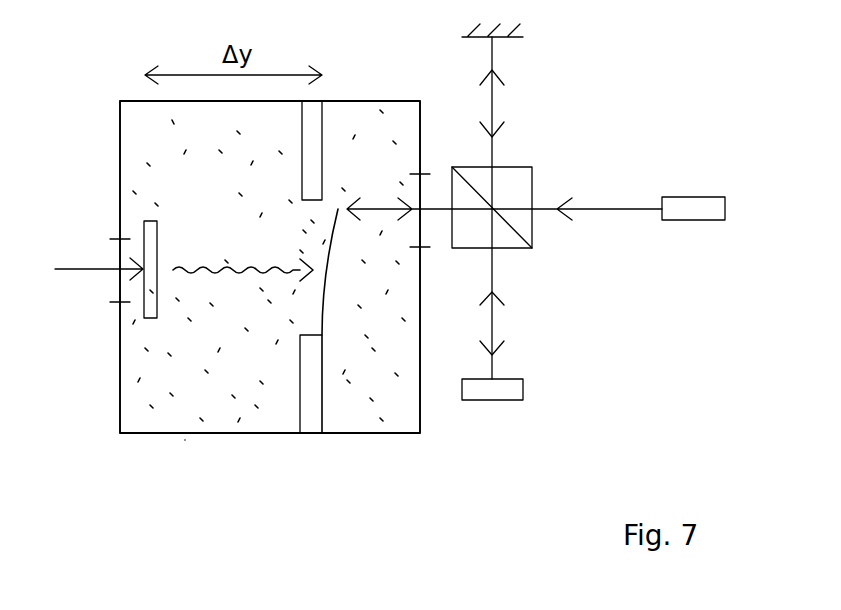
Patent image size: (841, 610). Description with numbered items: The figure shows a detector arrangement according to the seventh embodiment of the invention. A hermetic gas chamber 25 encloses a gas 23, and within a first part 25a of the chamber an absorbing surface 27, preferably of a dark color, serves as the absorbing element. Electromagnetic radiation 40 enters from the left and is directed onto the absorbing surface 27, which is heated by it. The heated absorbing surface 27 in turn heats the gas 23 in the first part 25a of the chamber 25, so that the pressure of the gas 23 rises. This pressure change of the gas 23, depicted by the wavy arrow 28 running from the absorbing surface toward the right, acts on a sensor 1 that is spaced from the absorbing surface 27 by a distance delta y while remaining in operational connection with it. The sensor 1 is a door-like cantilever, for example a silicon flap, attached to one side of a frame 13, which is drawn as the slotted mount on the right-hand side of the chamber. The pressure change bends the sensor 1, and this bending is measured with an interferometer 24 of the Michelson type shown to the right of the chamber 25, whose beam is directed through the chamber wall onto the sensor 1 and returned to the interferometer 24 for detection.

The sensor 1 is at (323, 315).
The frame 13 is at (312, 408).
The gas 23 is at (185, 405).
The interferometer 24 is at (614, 75).
The hermetic gas chamber 25 is at (348, 433).
The first part of the chamber 25a is at (147, 127).
The absorbing surface 27 is at (152, 233).
The arrow depicting pressure change 28 is at (225, 265).
The electromagnetic radiation 40 is at (98, 270).